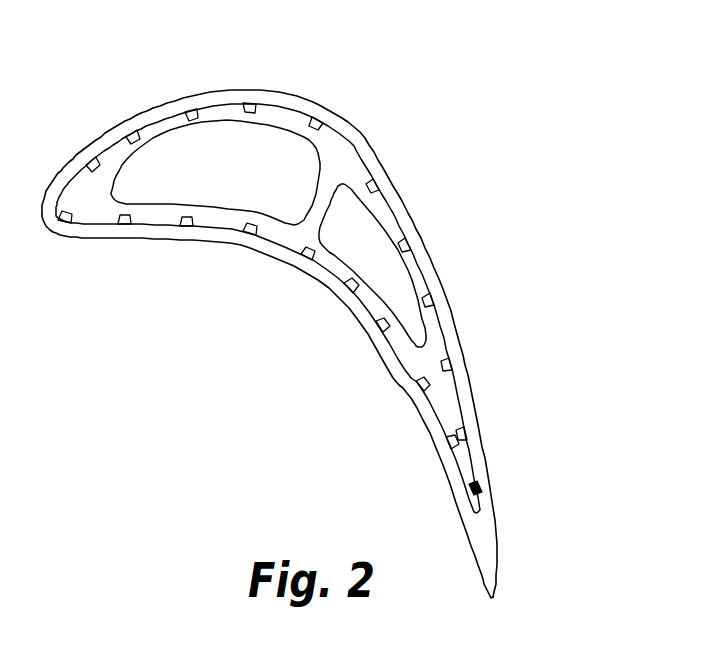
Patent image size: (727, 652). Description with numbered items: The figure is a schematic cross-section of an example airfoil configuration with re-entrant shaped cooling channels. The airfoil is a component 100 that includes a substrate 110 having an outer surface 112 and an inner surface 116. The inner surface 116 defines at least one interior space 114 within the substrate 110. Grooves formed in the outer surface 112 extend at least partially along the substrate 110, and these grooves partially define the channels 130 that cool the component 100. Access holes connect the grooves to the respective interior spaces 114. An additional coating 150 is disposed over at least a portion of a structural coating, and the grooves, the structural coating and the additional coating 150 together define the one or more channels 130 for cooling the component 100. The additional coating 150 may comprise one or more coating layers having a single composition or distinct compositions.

The component 100 is at (540, 56).
The substrate 110 is at (330, 158).
The outer surface 112 is at (390, 207).
The interior space 114 is at (253, 148).
The inner surface 116 is at (177, 200).
The channels 130 is at (433, 300).
The additional coating 150 is at (315, 273).